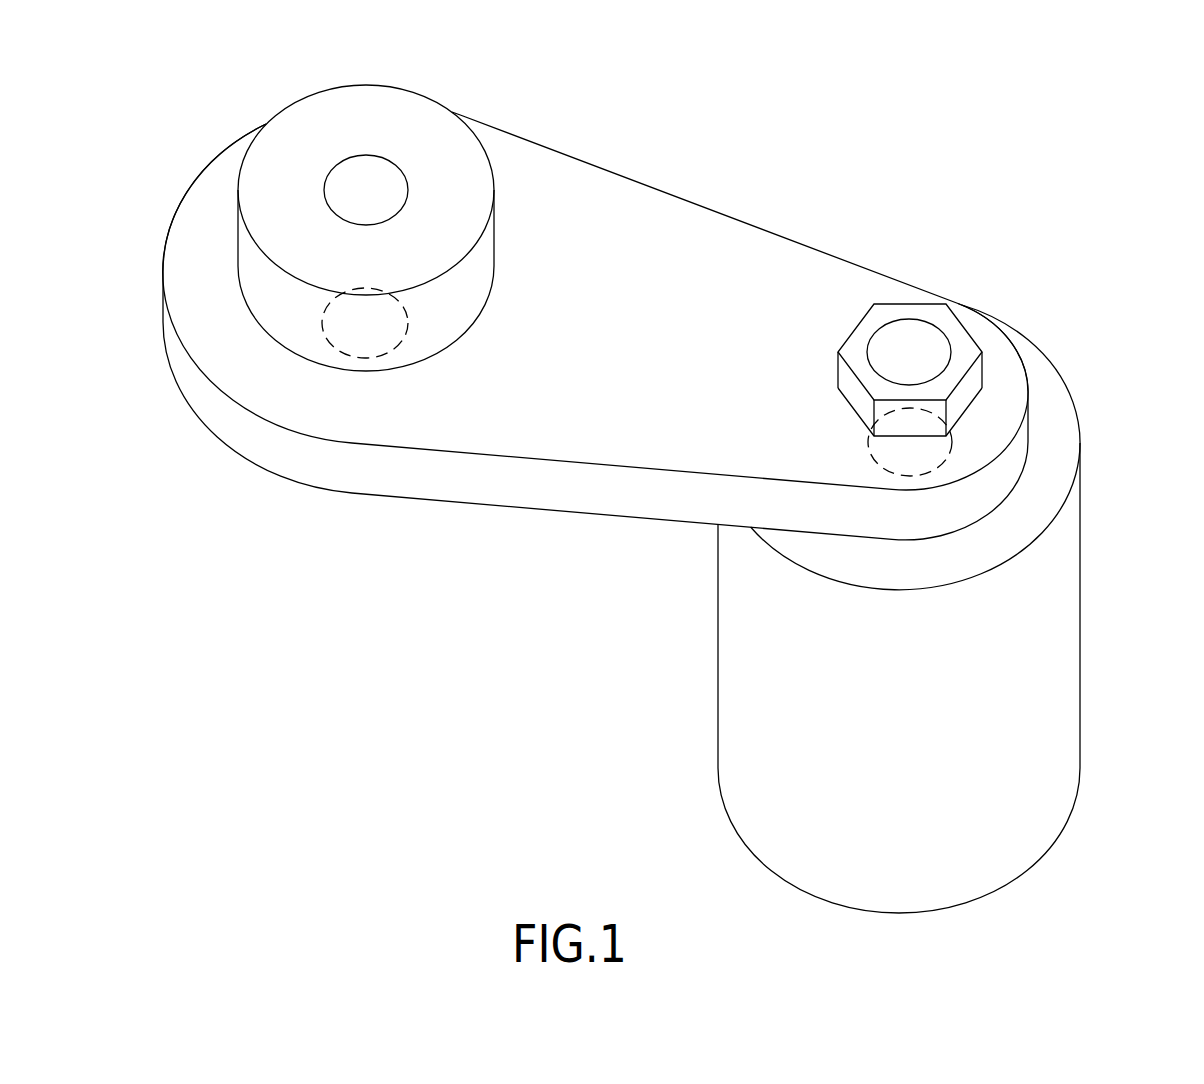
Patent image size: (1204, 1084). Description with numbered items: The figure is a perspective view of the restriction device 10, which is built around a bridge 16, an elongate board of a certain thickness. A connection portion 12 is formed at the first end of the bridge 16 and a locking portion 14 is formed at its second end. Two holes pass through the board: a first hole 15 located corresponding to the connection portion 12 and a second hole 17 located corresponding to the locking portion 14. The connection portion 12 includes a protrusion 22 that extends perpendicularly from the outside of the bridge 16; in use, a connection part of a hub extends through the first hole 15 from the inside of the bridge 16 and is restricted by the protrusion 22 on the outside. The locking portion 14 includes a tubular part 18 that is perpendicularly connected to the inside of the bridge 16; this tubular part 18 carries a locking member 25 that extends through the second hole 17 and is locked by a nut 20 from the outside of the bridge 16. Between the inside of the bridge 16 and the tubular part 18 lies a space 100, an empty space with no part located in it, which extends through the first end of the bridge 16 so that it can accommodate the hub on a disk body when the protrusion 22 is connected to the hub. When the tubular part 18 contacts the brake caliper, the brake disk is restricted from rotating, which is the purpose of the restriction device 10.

The restriction device 10 is at (853, 180).
The connection portion 12 is at (500, 114).
The locking portion 14 is at (889, 316).
The first hole 15 is at (373, 335).
The bridge 16 is at (652, 184).
The second hole 17 is at (892, 448).
The tubular part 18 is at (1080, 562).
The nut 20 is at (965, 348).
The protrusion 22 is at (268, 98).
The locking member 25 is at (890, 340).
The space 100 is at (575, 667).